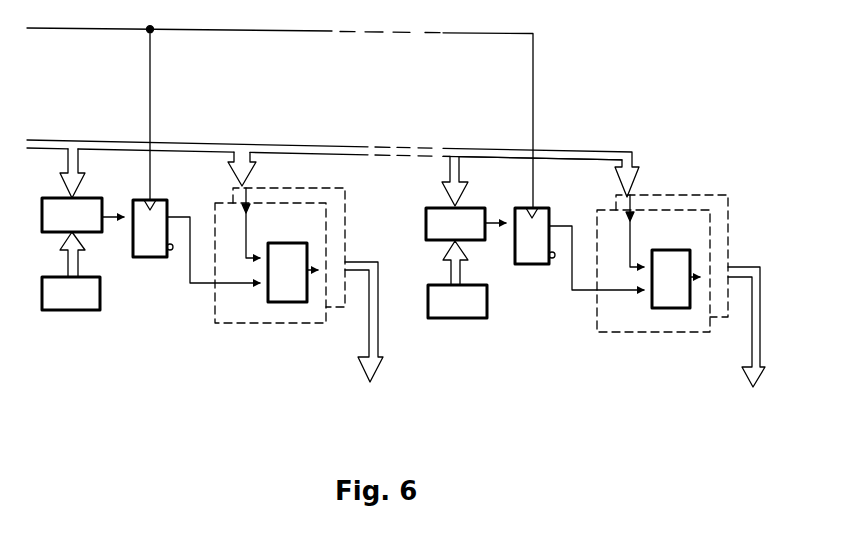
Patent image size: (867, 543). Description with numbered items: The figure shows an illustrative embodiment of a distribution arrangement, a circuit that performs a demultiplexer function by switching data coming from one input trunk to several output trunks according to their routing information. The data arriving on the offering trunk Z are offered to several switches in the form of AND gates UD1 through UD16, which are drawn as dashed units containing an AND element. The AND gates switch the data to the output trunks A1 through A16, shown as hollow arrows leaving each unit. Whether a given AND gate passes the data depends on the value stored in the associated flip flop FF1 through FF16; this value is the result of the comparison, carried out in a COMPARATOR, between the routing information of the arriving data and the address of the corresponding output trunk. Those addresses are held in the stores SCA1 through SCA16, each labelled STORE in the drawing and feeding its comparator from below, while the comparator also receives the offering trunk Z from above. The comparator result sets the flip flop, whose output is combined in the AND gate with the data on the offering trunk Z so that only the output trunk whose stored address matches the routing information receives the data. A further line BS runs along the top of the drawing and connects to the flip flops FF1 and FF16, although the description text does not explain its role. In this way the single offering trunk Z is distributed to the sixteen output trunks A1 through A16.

The bus line BS is at (280, 109).
The offering trunk Z is at (333, 163).
The comparator COMPARATOR is at (102, 232).
The store STORE is at (93, 309).
The flip flop FF1 is at (196, 241).
The flip flop FF16 is at (579, 249).
The store SCA1 is at (71, 271).
The store SCA16 is at (457, 279).
The AND gate UD1 is at (280, 269).
The AND gate UD16 is at (662, 278).
The output trunk A1 is at (364, 337).
The output trunk A16 is at (749, 346).